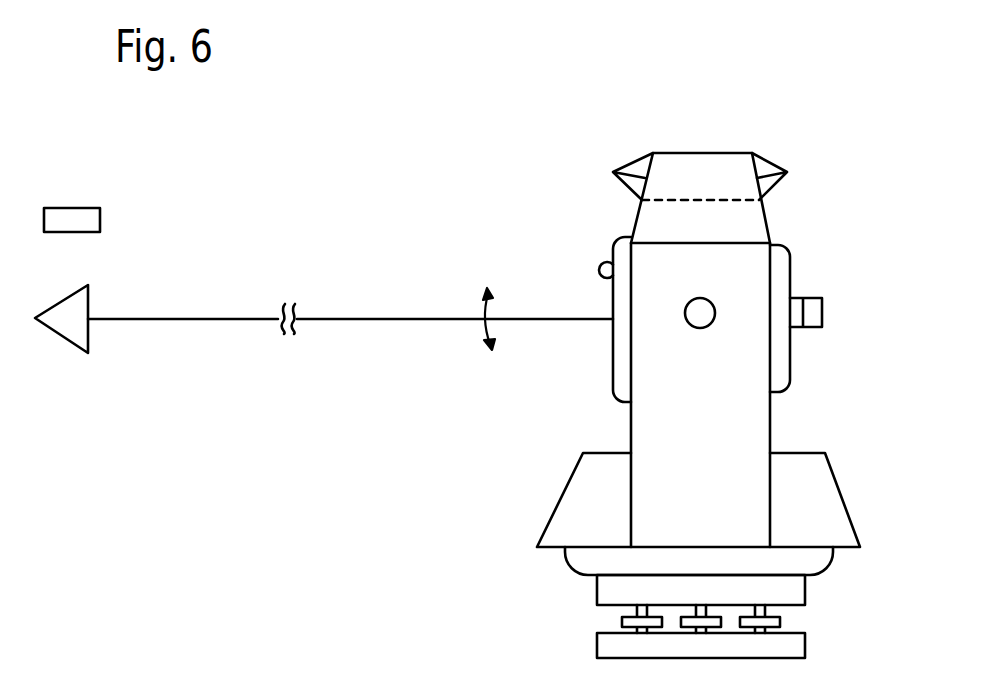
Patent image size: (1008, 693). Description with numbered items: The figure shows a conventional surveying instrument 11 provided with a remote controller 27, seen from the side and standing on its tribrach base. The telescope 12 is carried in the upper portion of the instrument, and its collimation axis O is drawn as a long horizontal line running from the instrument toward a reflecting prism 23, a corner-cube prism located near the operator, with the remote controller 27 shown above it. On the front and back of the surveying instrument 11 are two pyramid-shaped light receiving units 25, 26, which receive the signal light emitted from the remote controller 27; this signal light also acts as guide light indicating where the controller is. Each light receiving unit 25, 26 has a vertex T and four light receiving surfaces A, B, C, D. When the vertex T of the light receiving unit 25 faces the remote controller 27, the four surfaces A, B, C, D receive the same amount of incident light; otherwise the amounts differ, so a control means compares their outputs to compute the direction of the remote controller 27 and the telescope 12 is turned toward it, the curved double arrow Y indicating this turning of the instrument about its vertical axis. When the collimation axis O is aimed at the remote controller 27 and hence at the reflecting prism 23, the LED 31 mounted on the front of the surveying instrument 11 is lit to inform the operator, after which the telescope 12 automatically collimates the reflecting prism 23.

The surveying instrument 11 is at (747, 425).
The telescope 12 is at (784, 275).
The reflecting prism 23 is at (88, 302).
The light receiving unit 25 is at (615, 160).
The light receiving unit 26 is at (787, 161).
The remote controller 27 is at (102, 220).
The LED 31 is at (601, 266).
The collimation axis O is at (405, 317).
The rotation direction Y is at (483, 325).
The vertex T is at (613, 172).
The light receiving surface A is at (760, 159).
The light receiving surface B is at (772, 187).
The light receiving surface C is at (641, 160).
The light receiving surface D is at (627, 187).